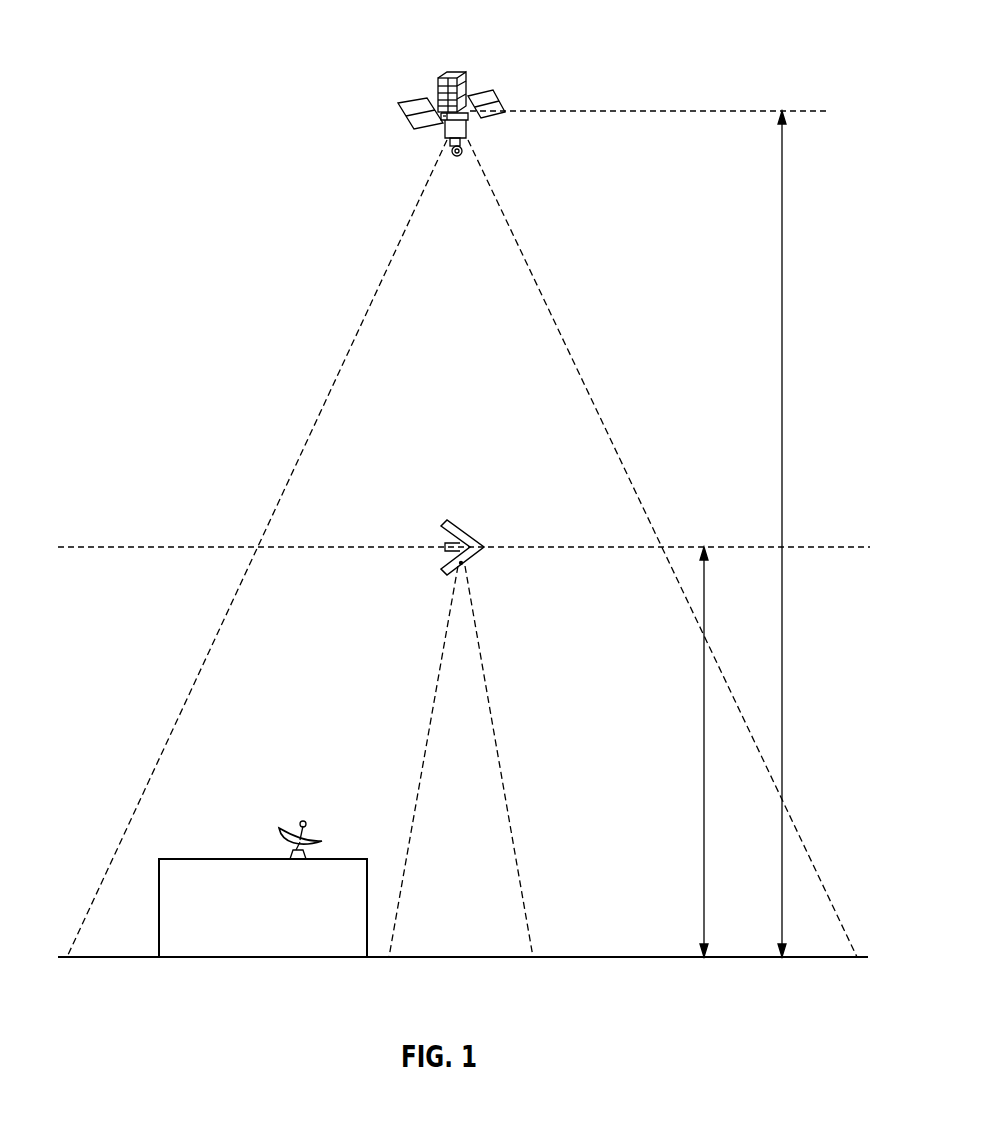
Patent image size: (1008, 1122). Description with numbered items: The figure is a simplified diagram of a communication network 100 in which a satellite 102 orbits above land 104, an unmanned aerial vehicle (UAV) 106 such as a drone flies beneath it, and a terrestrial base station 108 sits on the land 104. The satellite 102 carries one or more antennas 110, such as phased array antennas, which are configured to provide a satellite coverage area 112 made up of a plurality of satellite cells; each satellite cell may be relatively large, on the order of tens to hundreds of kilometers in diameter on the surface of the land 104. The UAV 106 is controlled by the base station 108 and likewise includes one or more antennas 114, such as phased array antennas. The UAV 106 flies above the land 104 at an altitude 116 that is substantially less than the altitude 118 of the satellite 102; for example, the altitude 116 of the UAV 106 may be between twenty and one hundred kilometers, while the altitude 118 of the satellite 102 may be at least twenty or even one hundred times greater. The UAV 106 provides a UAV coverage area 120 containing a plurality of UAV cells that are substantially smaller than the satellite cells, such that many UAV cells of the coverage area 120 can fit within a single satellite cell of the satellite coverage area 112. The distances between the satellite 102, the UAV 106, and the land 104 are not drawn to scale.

The communication network 100 is at (205, 41).
The satellite 102 is at (494, 55).
The land 104 is at (600, 956).
The unmanned aerial vehicle (UAV) 106 is at (490, 553).
The base station 108 is at (372, 852).
The antennas 110 is at (463, 147).
The satellite coverage area 112 is at (571, 338).
The antennas 114 is at (470, 569).
The altitude 116 is at (704, 735).
The altitude 118 is at (783, 471).
The UAV coverage area 120 is at (432, 752).